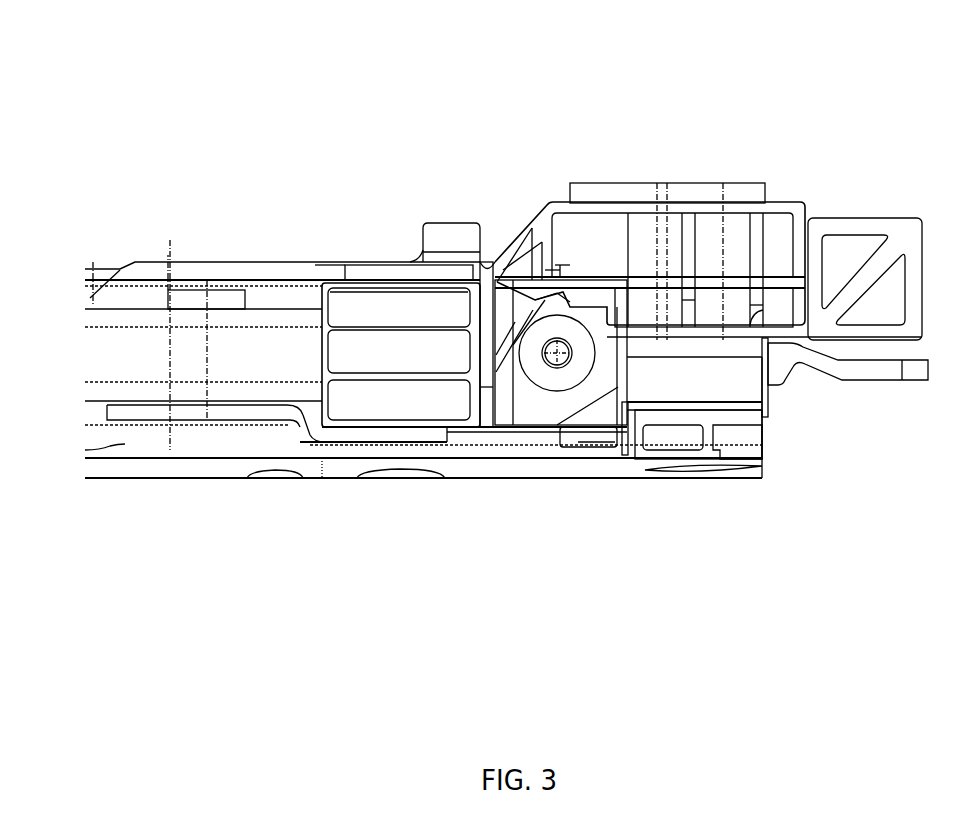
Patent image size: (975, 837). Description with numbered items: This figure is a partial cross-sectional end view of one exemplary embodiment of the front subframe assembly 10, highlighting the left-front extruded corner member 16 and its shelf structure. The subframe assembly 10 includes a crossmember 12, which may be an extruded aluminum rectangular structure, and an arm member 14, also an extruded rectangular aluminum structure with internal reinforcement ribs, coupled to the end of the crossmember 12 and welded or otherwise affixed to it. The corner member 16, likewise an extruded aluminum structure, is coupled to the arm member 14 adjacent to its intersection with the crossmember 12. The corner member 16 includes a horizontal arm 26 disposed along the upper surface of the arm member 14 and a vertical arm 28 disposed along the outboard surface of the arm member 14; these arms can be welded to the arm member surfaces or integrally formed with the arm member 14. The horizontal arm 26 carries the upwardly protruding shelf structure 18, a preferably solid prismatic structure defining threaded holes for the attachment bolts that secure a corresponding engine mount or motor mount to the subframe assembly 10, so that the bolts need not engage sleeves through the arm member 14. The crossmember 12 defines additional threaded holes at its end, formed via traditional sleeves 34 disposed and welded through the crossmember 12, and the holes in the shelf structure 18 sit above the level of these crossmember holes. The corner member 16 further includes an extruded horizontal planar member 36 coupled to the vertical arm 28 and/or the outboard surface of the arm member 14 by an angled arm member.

The subframe assembly 10 is at (371, 186).
The crossmember 12 is at (266, 273).
The arm member 14 is at (434, 275).
The corner member 16 is at (503, 213).
The shelf structure 18 is at (449, 217).
The horizontal arm 26 is at (364, 250).
The vertical arm 28 is at (468, 324).
The sleeve 34 is at (198, 272).
The horizontal planar member 36 is at (621, 192).